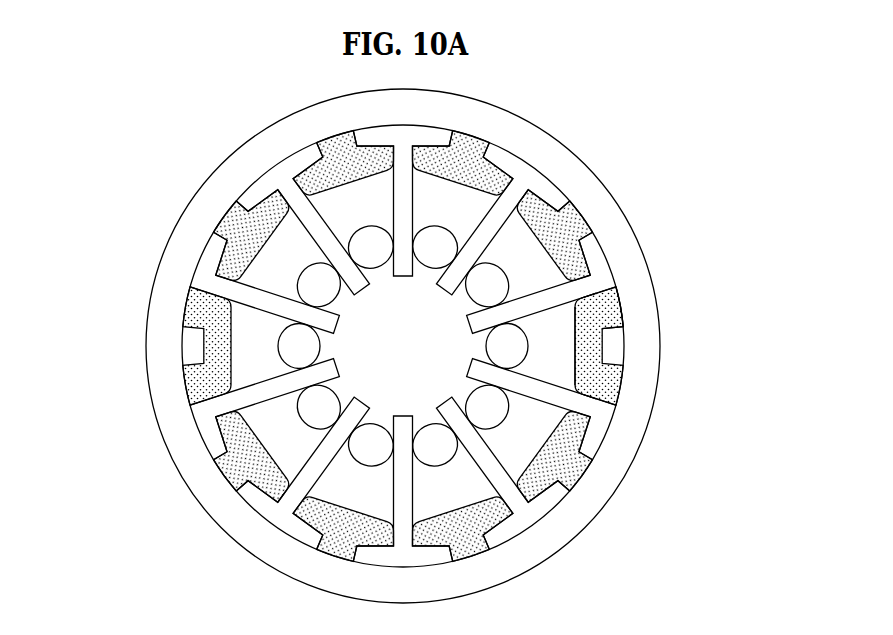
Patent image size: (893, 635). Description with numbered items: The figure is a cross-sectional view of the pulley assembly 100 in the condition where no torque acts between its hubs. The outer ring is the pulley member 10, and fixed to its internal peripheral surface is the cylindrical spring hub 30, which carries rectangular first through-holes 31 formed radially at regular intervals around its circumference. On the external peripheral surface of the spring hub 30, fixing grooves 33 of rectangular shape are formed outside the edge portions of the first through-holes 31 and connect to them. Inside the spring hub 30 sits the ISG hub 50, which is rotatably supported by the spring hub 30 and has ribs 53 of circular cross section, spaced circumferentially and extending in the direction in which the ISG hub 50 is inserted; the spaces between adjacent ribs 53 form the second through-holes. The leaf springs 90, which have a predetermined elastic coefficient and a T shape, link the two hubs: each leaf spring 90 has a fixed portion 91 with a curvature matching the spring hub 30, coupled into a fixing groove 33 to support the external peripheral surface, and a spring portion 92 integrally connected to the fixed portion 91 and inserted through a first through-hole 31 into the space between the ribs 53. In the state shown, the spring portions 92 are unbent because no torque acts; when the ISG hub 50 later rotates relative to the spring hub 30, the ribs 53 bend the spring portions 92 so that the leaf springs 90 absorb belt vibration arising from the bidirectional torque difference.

The pulley assembly 100 is at (165, 124).
The pulley member 10 is at (607, 179).
The spring hub 30 is at (598, 216).
The first through-holes 31 is at (222, 302).
The fixing grooves 33 is at (333, 136).
The ISG hub 50 is at (452, 221).
The ribs 53 is at (492, 282).
The leaf springs 90 is at (632, 293).
The fixed portion 91 is at (613, 313).
The spring portion 92 is at (590, 350).